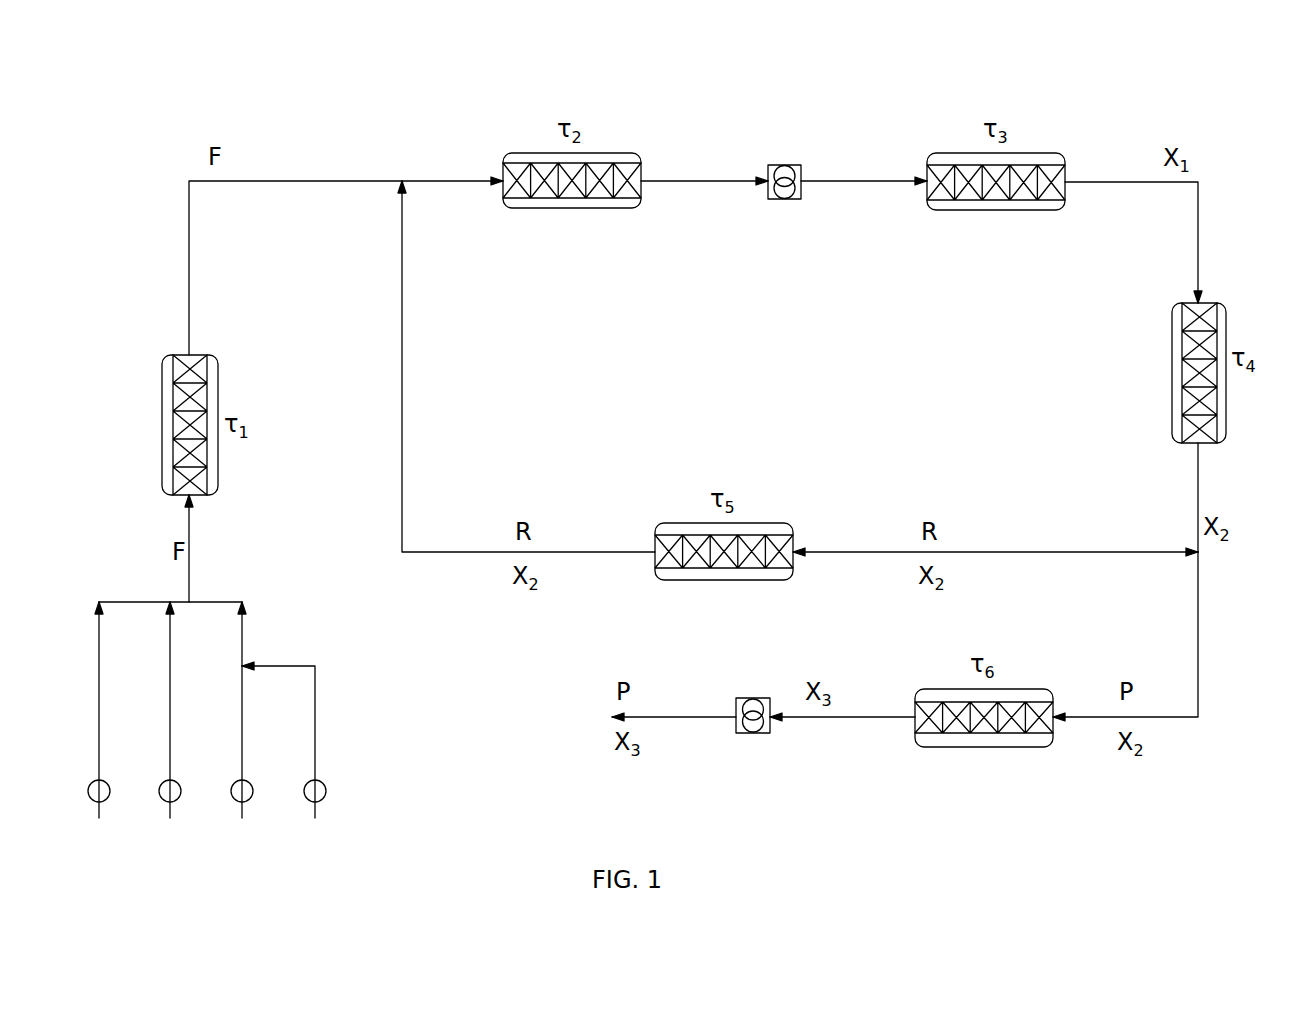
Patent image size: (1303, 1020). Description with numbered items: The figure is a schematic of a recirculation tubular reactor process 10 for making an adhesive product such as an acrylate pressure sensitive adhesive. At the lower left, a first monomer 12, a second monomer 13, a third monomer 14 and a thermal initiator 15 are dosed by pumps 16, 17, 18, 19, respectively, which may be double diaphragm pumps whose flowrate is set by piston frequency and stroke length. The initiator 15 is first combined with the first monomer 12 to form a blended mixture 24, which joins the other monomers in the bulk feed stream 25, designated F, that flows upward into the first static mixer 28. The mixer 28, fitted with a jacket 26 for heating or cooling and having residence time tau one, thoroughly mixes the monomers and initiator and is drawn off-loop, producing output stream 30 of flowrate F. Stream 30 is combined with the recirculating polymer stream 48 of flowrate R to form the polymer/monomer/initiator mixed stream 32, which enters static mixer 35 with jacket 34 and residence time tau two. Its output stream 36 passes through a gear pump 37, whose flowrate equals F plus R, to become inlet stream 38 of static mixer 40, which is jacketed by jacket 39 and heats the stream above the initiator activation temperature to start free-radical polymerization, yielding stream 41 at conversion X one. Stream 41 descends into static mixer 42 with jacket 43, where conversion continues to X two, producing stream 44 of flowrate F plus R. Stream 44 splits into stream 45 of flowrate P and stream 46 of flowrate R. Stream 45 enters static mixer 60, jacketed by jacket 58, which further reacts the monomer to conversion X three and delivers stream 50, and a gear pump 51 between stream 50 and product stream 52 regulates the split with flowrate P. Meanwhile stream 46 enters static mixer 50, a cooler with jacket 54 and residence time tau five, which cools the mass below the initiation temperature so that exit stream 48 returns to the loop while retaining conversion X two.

The recirculation tubular reactor process 10 is at (106, 128).
The first monomer 12 is at (242, 696).
The second monomer 13 is at (170, 696).
The third monomer 14 is at (99, 696).
The thermal initiator 15 is at (315, 696).
The pump 16 is at (253, 789).
The pump 17 is at (181, 789).
The pump 18 is at (110, 789).
The pump 19 is at (326, 789).
The blended mixture 24 is at (242, 636).
The bulk feed stream 25 is at (189, 553).
The jacket 26 is at (218, 374).
The first static mixer 28 is at (173, 434).
The output stream 30 is at (290, 181).
The polymer/monomer/initiator mixed stream 32 is at (440, 181).
The jacket 34 is at (568, 208).
The static mixer 35 is at (604, 160).
The output stream 36 is at (690, 181).
The gear pump 37 is at (785, 165).
The inlet stream 38 is at (865, 181).
The jacket 39 is at (993, 210).
The static mixer 40 is at (1044, 162).
The stream 41 is at (1198, 240).
The static mixer 42 is at (1182, 341).
The jacket 43 is at (1226, 404).
The stream 44 is at (1198, 504).
The stream 45 is at (1198, 664).
The stream 46 is at (1034, 552).
The recirculating polymer stream 48 is at (402, 363).
The static mixer 50 is at (774, 532).
The gear pump 51 is at (753, 733).
The stream 52 is at (678, 717).
The jacket 54 is at (723, 580).
The jacket 58 is at (985, 747).
The static mixer 60 is at (1032, 699).